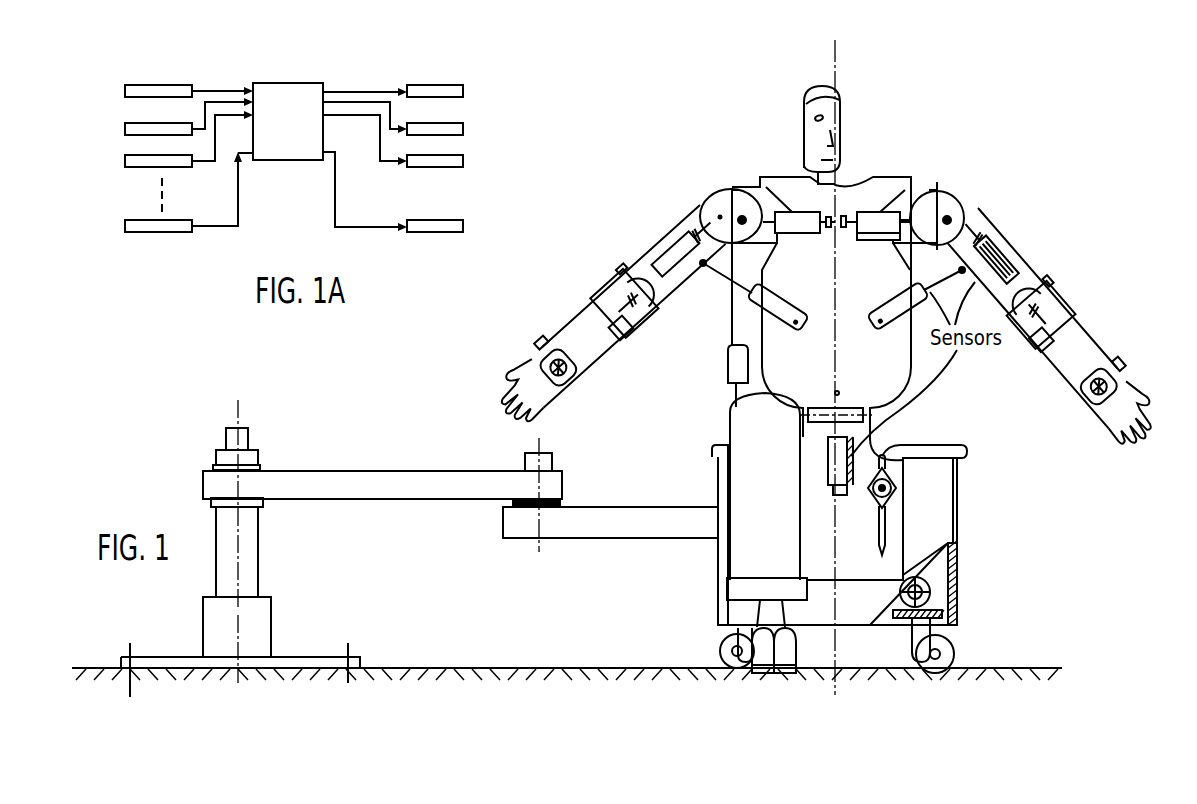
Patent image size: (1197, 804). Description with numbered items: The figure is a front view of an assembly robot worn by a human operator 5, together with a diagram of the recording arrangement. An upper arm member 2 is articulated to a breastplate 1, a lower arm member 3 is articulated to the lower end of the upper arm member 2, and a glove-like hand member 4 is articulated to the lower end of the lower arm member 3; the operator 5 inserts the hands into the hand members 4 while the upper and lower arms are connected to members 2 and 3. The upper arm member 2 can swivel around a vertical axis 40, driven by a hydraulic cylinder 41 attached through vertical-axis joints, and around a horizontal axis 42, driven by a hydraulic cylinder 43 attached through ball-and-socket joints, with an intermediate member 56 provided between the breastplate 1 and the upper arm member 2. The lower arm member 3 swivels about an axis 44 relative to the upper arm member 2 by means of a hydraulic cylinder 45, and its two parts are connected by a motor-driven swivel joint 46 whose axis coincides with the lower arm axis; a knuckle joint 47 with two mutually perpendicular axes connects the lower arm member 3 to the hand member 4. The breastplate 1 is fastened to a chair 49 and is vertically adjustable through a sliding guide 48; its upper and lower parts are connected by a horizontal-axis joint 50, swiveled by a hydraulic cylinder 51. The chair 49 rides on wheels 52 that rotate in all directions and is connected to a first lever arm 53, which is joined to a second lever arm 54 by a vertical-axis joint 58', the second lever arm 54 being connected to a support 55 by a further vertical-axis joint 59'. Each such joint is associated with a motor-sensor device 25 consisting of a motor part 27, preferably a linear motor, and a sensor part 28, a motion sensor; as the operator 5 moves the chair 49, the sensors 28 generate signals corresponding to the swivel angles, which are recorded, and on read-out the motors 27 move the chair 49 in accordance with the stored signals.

In FIG. 1, the breastplate 1 is at (876, 188).
In FIG. 1, the upper arm member 2 is at (663, 236).
In FIG. 1, the lower arm member 3 is at (594, 357).
In FIG. 1, the hand member 4 is at (545, 407).
In FIG. 1, the human operator 5 is at (803, 120).
In FIG. 1A, the motor-sensor device 25 is at (425, 83).
In FIG. 1, the motor-sensor device 25 is at (265, 469).
In FIG. 1A, the motor part 27 is at (444, 176).
In FIG. 1A, the sensor part 28 is at (173, 176).
In FIG. 1, the vertical axis 40 is at (731, 189).
In FIG. 1, the hydraulic cylinder 41 is at (803, 212).
In FIG. 1, the horizontal axis 42 is at (700, 206).
In FIG. 1, the hydraulic cylinder 43 is at (748, 296).
In FIG. 1, the axis 44 is at (622, 266).
In FIG. 1, the hydraulic cylinder 45 is at (657, 244).
In FIG. 1, the swivel joint 46 is at (628, 338).
In FIG. 1, the knuckle joint 47 is at (550, 366).
In FIG. 1, the sliding guide 48 is at (887, 506).
In FIG. 1, the chair 49 is at (957, 531).
In FIG. 1, the joint 50 is at (863, 413).
In FIG. 1, the hydraulic cylinder 51 is at (850, 451).
In FIG. 1, the wheels 52 is at (951, 646).
In FIG. 1, the first lever arm 53 is at (634, 520).
In FIG. 1, the second lever arm 54 is at (427, 486).
In FIG. 1, the support 55 is at (259, 548).
In FIG. 1, the intermediate member 56 is at (720, 214).
In FIG. 1, the joint 58' is at (510, 486).
In FIG. 1, the joint 59' is at (221, 435).